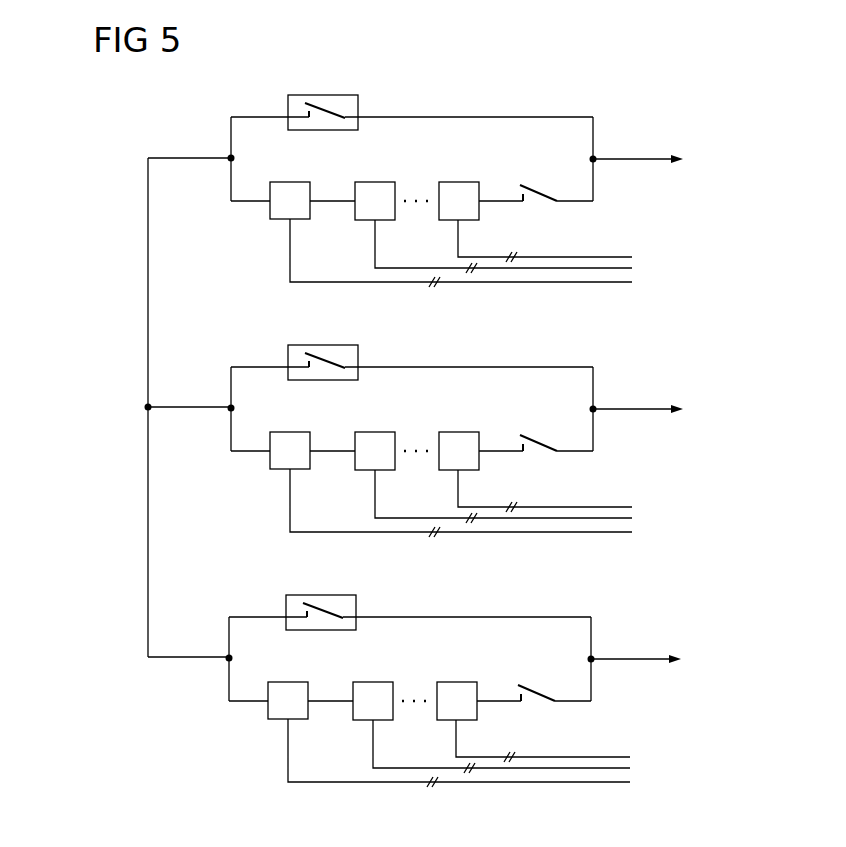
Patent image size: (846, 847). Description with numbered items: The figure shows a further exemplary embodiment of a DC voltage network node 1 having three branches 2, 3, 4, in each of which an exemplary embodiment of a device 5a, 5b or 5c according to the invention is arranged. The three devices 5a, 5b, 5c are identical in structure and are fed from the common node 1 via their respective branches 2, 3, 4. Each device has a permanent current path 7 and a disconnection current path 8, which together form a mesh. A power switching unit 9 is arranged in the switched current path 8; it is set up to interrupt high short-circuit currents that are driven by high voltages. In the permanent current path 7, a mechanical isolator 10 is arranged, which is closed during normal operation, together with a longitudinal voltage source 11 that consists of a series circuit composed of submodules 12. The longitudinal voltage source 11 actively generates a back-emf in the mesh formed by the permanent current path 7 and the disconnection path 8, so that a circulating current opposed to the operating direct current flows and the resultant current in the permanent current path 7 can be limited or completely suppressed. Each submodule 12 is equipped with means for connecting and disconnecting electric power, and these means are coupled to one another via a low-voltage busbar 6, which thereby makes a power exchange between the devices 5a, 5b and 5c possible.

The DC voltage network node 1 is at (148, 293).
The branch 2 is at (190, 157).
The branch 3 is at (190, 406).
The branch 4 is at (186, 656).
The device 5a is at (571, 105).
The device 5b is at (571, 355).
The device 5c is at (569, 605).
The low-voltage busbar 6 is at (658, 233).
The permanent current path 7 is at (250, 205).
The disconnection current path 8 is at (425, 117).
The power switching unit 9 is at (323, 95).
The mechanical isolator 10 is at (540, 200).
The longitudinal voltage source 11 is at (250, 174).
The submodule 12 is at (313, 186).